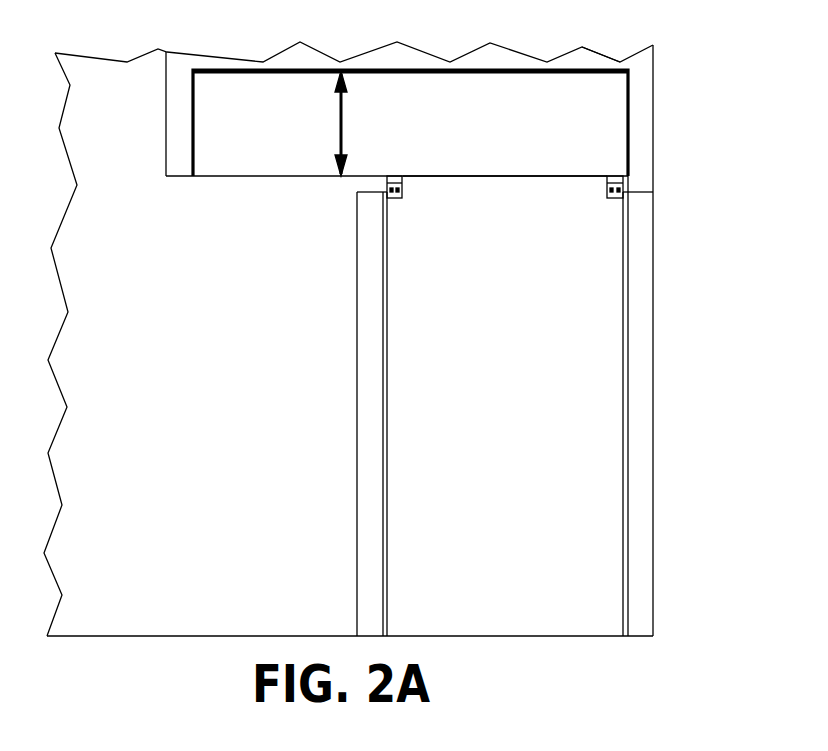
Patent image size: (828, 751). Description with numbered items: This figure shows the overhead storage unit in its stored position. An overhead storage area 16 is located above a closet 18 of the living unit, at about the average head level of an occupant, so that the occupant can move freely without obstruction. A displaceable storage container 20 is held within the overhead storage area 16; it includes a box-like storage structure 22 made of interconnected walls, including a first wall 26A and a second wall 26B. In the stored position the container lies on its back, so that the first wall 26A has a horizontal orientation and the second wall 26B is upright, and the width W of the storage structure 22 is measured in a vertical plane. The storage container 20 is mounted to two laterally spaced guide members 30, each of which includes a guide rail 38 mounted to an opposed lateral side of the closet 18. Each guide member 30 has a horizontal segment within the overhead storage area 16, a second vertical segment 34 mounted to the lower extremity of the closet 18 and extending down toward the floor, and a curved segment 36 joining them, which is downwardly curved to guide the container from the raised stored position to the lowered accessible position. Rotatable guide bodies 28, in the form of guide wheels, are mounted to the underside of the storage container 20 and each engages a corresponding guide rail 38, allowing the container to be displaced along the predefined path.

The overhead storage area 16 is at (620, 138).
The closet 18 is at (518, 445).
The storage container 20 is at (597, 85).
The storage structure 22 is at (240, 85).
The first wall 26A is at (562, 180).
The second wall 26B is at (426, 85).
The rotatable guide bodies 28 is at (395, 200).
The guide member 30 is at (372, 386).
The second vertical segment 34 is at (382, 565).
The curved segment 36 is at (383, 220).
The guide rail 38 is at (382, 274).
The width W is at (339, 124).